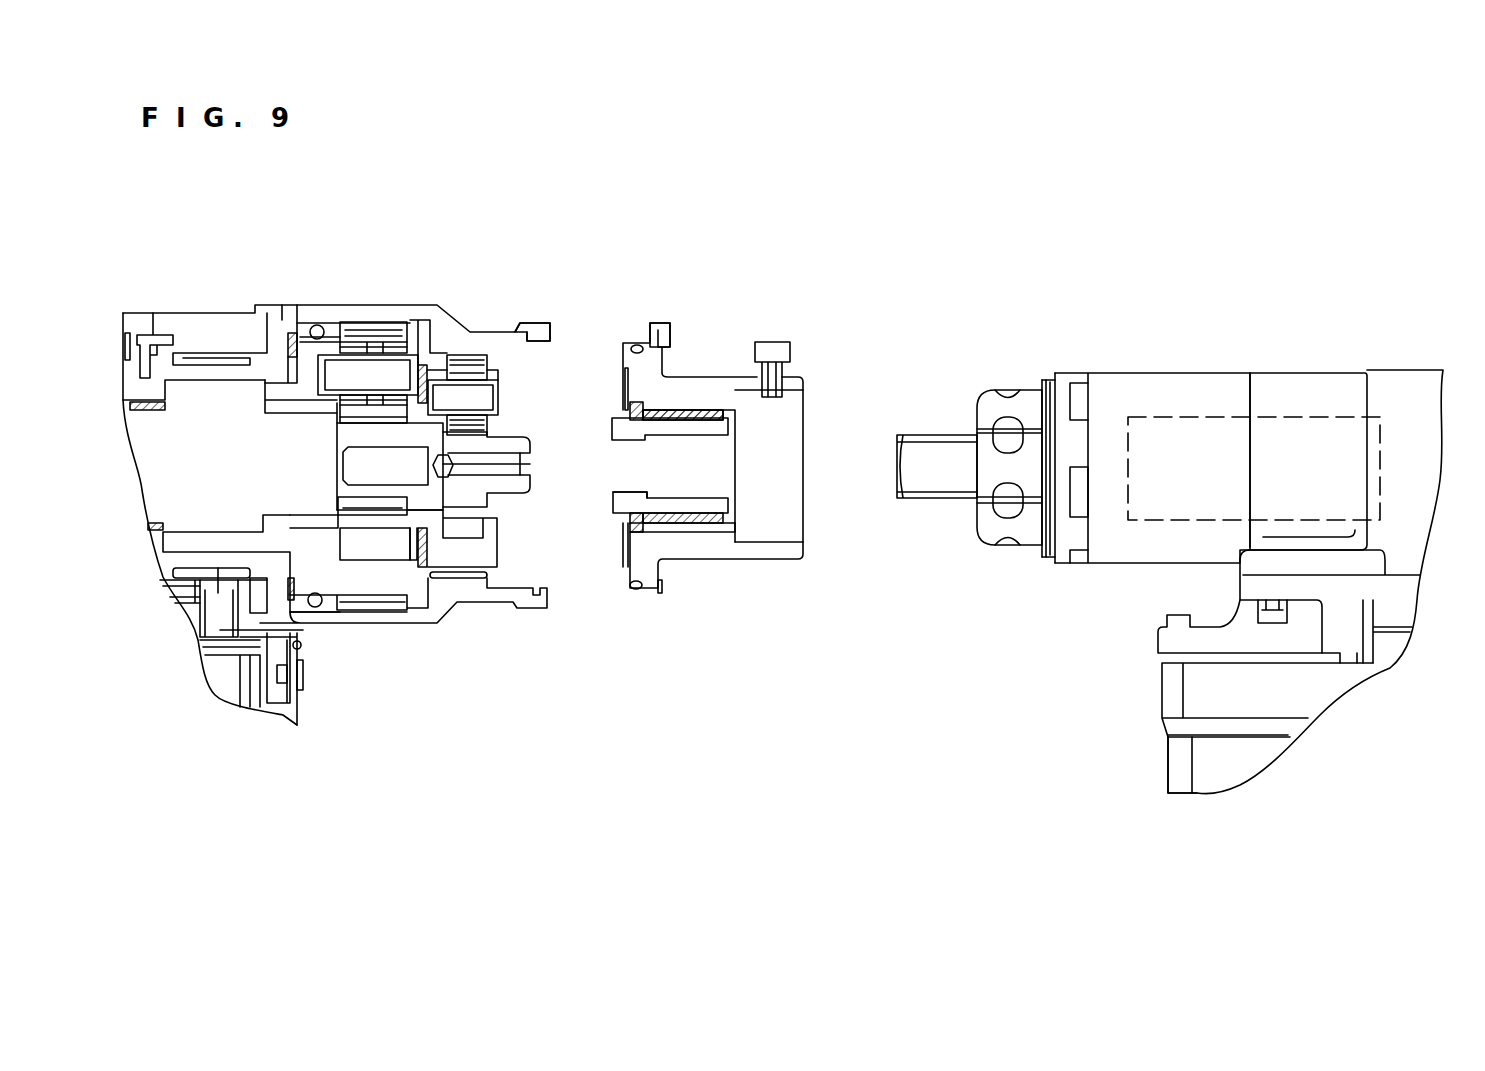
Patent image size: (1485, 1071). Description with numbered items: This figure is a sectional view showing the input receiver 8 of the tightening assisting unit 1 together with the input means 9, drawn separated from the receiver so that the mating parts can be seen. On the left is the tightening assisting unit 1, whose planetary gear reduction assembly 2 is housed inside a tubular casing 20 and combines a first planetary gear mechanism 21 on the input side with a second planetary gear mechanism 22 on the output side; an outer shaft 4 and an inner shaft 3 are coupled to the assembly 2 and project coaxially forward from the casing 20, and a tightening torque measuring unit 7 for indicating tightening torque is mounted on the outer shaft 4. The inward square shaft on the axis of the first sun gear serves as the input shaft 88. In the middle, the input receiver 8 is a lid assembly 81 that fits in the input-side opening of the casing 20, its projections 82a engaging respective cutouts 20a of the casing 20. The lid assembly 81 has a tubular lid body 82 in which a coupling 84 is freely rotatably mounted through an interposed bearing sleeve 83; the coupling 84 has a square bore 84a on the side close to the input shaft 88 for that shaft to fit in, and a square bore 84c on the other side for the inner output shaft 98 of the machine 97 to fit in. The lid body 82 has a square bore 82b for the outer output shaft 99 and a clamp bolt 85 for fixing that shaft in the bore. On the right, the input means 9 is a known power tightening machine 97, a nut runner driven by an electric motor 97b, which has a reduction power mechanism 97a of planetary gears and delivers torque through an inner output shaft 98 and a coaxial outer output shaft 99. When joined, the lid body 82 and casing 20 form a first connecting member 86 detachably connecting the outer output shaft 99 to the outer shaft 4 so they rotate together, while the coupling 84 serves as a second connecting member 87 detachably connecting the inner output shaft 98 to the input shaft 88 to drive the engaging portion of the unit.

The tightening assisting unit 1 is at (672, 767).
The planetary gear reduction assembly 2 is at (472, 218).
The inner shaft 3 is at (210, 447).
The outer shaft 4 is at (168, 373).
The tightening torque measuring unit 7 is at (312, 705).
The input receiver 8 is at (747, 500).
The lid assembly 81 is at (740, 590).
The input means 9 is at (1170, 520).
The power tightening machine 97 is at (1116, 360).
The tubular casing 20 is at (467, 590).
The cutouts 20a is at (528, 323).
The first planetary gear mechanism 21 is at (465, 354).
The second planetary gear mechanism 22 is at (373, 322).
The lid body 82 is at (709, 547).
The projections 82a is at (655, 323).
The square bore 82b is at (770, 541).
The bearing sleeve 83 is at (698, 415).
The coupling 84 is at (747, 559).
The second connecting member 87 is at (688, 500).
The square bore 84a is at (626, 492).
The square bore 84c is at (709, 497).
The clamp bolt 85 is at (773, 342).
The first connecting member 86 is at (610, 768).
The input shaft 88 is at (502, 452).
The reduction power mechanism 97a is at (1293, 415).
The electric motor 97b is at (1178, 767).
The inner output shaft 98 is at (930, 455).
The outer output shaft 99 is at (1032, 528).